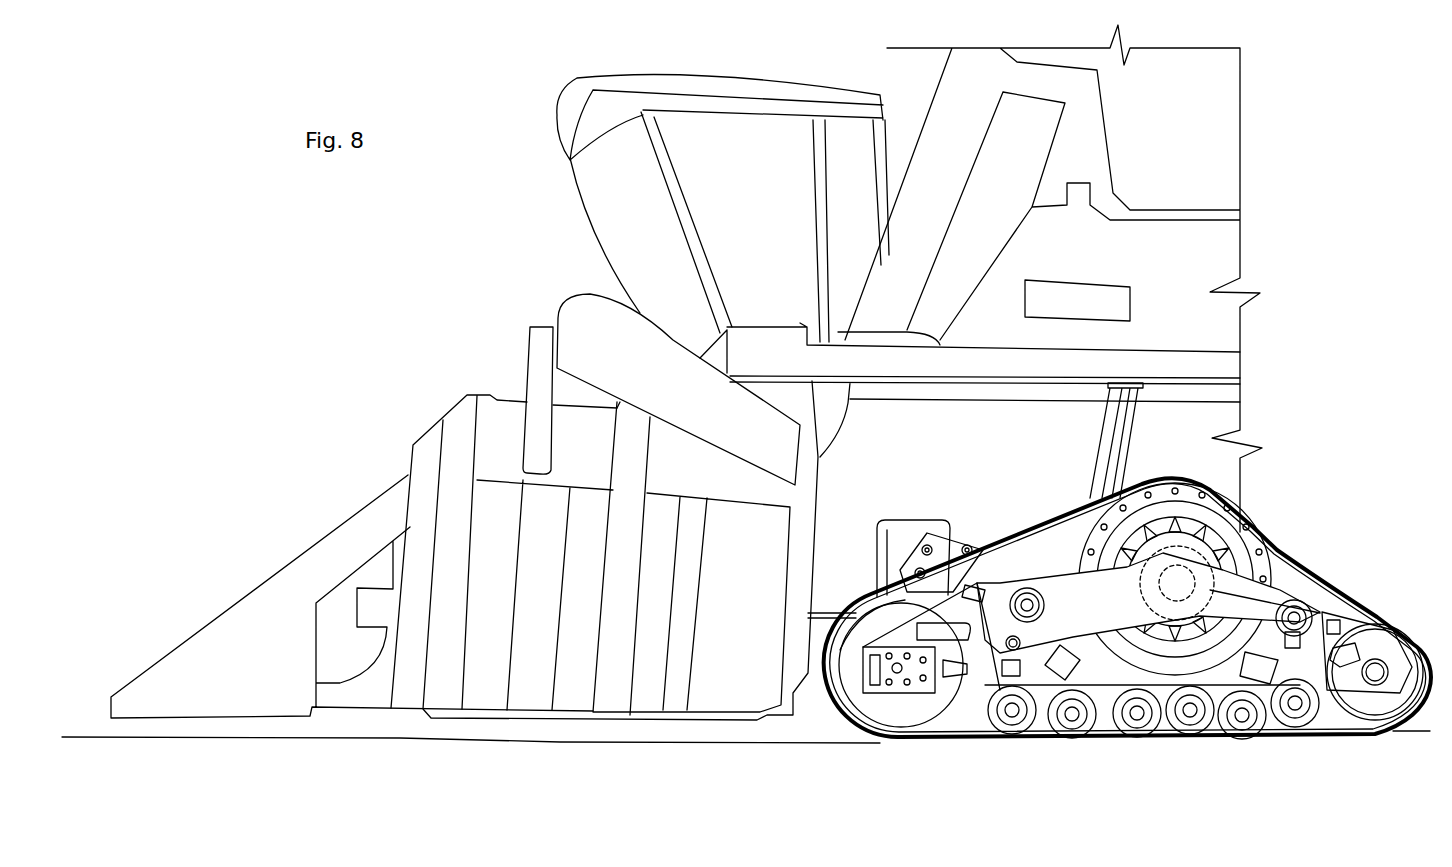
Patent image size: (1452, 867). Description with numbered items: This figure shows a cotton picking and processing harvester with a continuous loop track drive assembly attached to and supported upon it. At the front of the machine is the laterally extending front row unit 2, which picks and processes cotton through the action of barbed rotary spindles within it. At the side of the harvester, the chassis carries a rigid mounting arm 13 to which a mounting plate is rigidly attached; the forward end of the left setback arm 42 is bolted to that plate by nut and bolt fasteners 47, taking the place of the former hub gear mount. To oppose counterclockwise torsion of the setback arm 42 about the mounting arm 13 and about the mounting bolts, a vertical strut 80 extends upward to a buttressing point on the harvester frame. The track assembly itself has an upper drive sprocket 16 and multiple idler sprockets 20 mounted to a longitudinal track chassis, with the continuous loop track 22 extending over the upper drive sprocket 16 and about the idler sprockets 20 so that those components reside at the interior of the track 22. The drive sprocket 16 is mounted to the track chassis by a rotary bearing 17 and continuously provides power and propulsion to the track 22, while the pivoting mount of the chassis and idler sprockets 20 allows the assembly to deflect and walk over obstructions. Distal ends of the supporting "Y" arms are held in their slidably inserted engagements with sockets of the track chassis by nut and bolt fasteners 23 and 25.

The front row unit 2 is at (424, 517).
The mounting arm 13 is at (897, 557).
The nut and bolt fasteners 47 is at (950, 548).
The setback arm 42 is at (965, 548).
The vertical strut 80 is at (1117, 453).
The upper drive sprocket 16 is at (1277, 557).
The continuous loop track 22 is at (1330, 580).
The idler sprockets 20 is at (893, 713).
The nut and bolt fastener 23 is at (977, 610).
The rotary bearing 17 is at (1180, 590).
The nut and bolt fastener 25 is at (1307, 630).